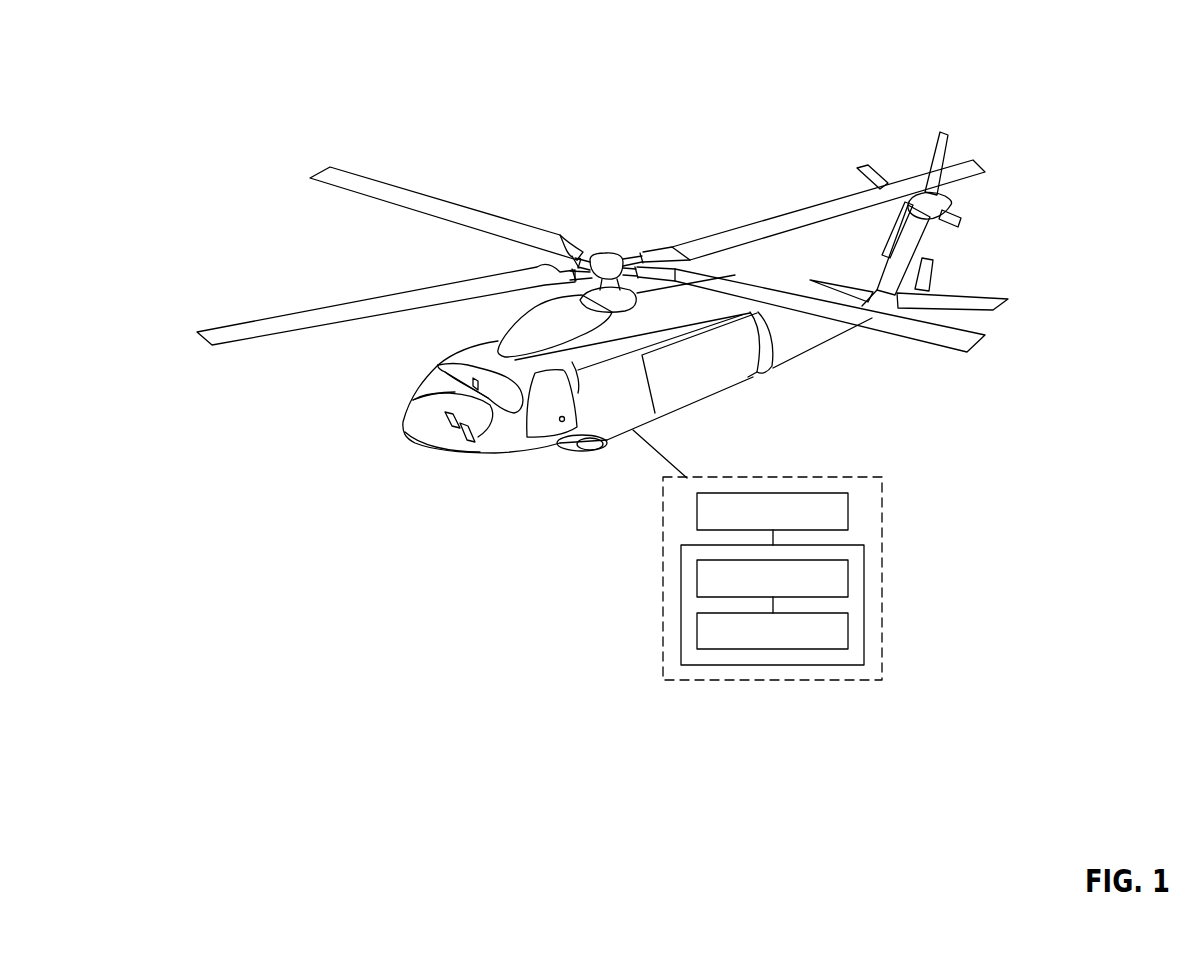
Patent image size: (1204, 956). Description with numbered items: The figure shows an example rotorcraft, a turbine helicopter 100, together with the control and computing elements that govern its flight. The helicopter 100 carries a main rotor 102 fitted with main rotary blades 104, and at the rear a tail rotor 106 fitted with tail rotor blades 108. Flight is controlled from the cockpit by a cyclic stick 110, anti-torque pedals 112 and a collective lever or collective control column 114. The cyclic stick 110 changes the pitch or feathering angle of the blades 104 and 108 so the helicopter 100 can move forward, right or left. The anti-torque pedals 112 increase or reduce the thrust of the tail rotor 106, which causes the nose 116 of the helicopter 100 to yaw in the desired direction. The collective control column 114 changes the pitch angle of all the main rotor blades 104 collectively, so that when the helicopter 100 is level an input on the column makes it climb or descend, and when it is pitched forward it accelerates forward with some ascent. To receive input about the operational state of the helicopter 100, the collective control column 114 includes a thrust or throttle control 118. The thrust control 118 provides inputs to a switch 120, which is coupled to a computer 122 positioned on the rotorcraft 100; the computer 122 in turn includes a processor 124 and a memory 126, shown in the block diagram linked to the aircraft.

The helicopter 100 is at (758, 91).
The main rotor 102 is at (607, 252).
The main rotary blades 104 is at (377, 182).
The tail rotor 106 is at (945, 205).
The tail rotor blades 108 is at (867, 170).
The cyclic stick 110 is at (440, 369).
The anti-torque pedals 112 is at (420, 400).
The collective control column 114 is at (573, 427).
The nose 116 is at (412, 440).
The thrust control 118 is at (572, 425).
The switch 120 is at (848, 506).
The computer 122 is at (681, 598).
The processor 124 is at (848, 578).
The memory 126 is at (848, 630).